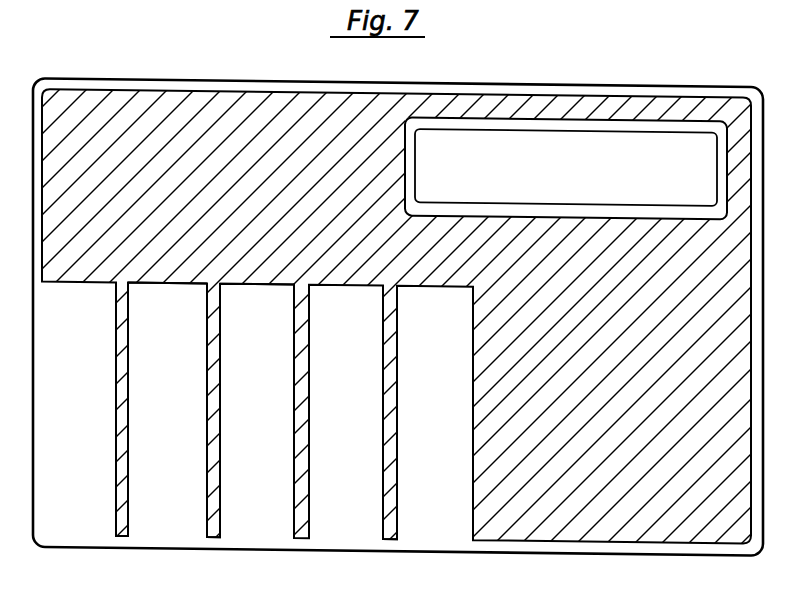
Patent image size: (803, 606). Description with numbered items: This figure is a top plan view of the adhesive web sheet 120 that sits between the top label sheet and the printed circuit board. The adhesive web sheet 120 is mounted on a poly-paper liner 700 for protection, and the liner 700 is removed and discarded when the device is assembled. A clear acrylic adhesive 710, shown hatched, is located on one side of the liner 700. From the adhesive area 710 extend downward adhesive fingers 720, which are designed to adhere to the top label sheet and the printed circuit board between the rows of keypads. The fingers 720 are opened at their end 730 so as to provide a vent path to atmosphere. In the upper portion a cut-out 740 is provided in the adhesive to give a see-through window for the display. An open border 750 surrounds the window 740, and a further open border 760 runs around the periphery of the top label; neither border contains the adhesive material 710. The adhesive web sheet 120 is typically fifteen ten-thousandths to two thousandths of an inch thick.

The poly-paper liner 700 is at (94, 388).
The clear acrylic adhesive 710 is at (230, 122).
The adhesive fingers 720 is at (212, 428).
The open end of adhesive fingers 730 is at (160, 512).
The adhesive web sheet 120 is at (393, 557).
The cut-out 740 is at (573, 172).
The open border around window 750 is at (504, 121).
The open border around periphery 760 is at (760, 525).